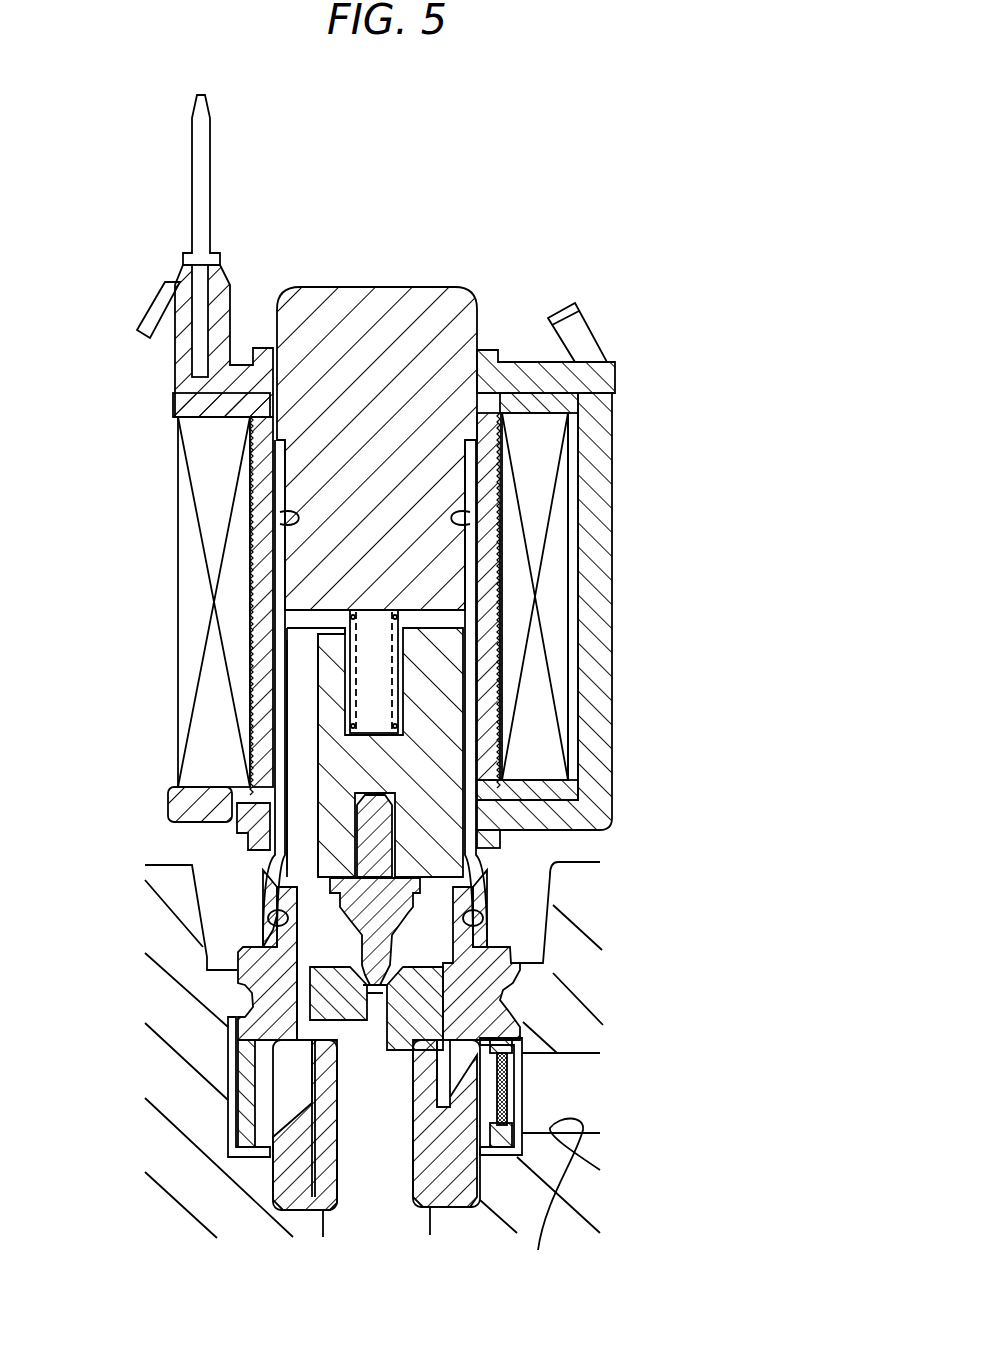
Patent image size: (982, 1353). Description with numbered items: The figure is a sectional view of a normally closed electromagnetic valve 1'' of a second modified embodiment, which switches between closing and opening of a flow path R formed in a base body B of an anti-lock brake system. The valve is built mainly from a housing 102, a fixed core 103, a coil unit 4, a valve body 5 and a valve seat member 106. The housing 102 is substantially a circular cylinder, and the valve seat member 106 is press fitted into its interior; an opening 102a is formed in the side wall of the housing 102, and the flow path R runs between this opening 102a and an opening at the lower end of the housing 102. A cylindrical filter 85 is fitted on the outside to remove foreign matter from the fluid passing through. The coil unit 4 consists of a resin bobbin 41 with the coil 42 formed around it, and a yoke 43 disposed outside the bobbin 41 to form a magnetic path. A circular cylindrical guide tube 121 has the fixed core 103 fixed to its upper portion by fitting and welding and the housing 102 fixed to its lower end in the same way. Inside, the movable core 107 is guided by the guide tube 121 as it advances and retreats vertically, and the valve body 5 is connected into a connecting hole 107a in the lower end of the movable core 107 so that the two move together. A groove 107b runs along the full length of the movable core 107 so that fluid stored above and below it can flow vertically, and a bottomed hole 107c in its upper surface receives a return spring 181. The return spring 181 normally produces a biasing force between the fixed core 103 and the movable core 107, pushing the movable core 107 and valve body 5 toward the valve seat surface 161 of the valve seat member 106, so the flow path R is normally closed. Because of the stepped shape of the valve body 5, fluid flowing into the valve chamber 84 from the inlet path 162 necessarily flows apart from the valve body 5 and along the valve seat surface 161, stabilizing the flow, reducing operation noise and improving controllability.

The normally closed electromagnetic valve 1'' is at (390, 256).
The fixed core 103 is at (392, 278).
The coil unit 4 is at (632, 372).
The yoke 43 is at (600, 423).
The coil 42 is at (560, 528).
The bobbin 41 is at (488, 612).
The return spring 181 is at (343, 641).
The bottomed hole 107c is at (400, 675).
The groove 107b is at (300, 686).
The movable core 107 is at (447, 717).
The connecting hole 107a is at (478, 857).
The base body B is at (560, 858).
The guide tube 121 is at (258, 871).
The valve chamber 84 is at (333, 951).
The valve body 5 is at (412, 937).
The valve seat surface 161 is at (500, 946).
The valve seat member 106 is at (460, 985).
The housing 102 is at (228, 981).
The inlet path 162 is at (353, 1002).
The opening 102a is at (482, 1080).
The cylindrical filter 85 is at (500, 1100).
The flow path R is at (433, 1230).